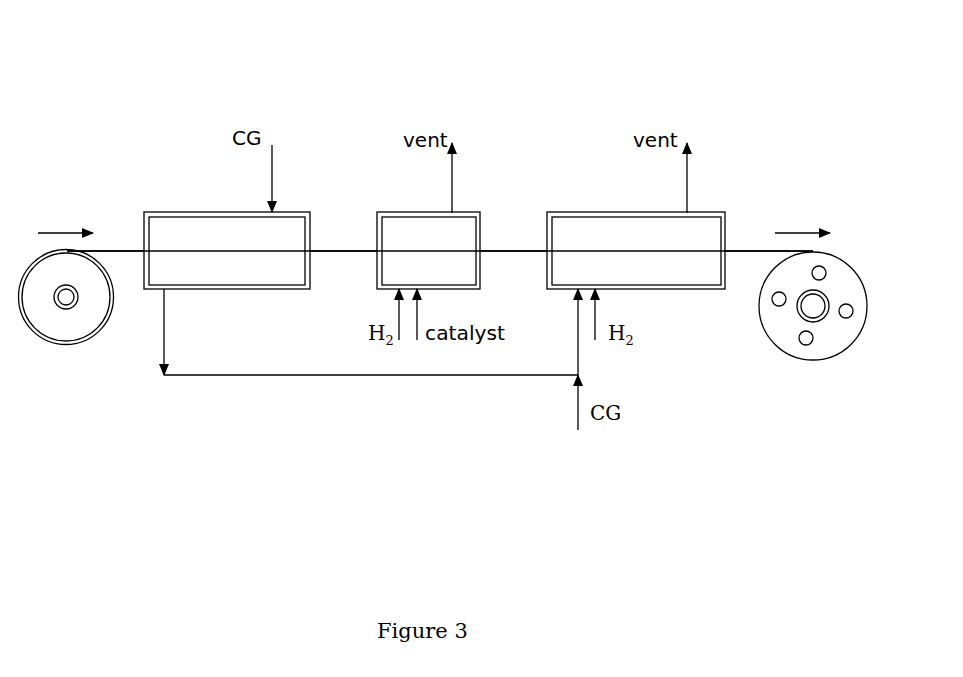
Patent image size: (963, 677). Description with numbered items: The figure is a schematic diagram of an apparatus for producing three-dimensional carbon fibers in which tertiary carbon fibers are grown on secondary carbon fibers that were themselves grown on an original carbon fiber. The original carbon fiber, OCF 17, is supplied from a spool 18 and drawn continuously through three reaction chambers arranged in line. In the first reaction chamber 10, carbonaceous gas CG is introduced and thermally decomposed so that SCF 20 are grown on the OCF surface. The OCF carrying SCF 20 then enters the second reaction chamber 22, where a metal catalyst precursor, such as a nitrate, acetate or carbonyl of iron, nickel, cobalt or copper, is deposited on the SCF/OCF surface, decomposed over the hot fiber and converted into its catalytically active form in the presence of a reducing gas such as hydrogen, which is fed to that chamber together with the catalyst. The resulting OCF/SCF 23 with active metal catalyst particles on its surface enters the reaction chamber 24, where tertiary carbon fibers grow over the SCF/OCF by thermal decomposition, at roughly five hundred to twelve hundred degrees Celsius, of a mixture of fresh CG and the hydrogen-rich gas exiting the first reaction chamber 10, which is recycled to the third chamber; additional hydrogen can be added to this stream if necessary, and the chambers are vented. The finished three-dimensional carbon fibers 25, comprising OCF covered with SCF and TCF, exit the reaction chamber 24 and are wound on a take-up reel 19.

The reaction chamber 10 is at (182, 213).
The OCF 17 is at (128, 250).
The spool 18 is at (77, 343).
The take-up reel 19 is at (777, 347).
The SCF 20 is at (343, 250).
The second reaction chamber 22 is at (400, 213).
The OCF/SCF with metal catalyst particles 23 is at (522, 250).
The reaction chamber 24 is at (612, 213).
The 3D carbon fibers 25 is at (759, 252).